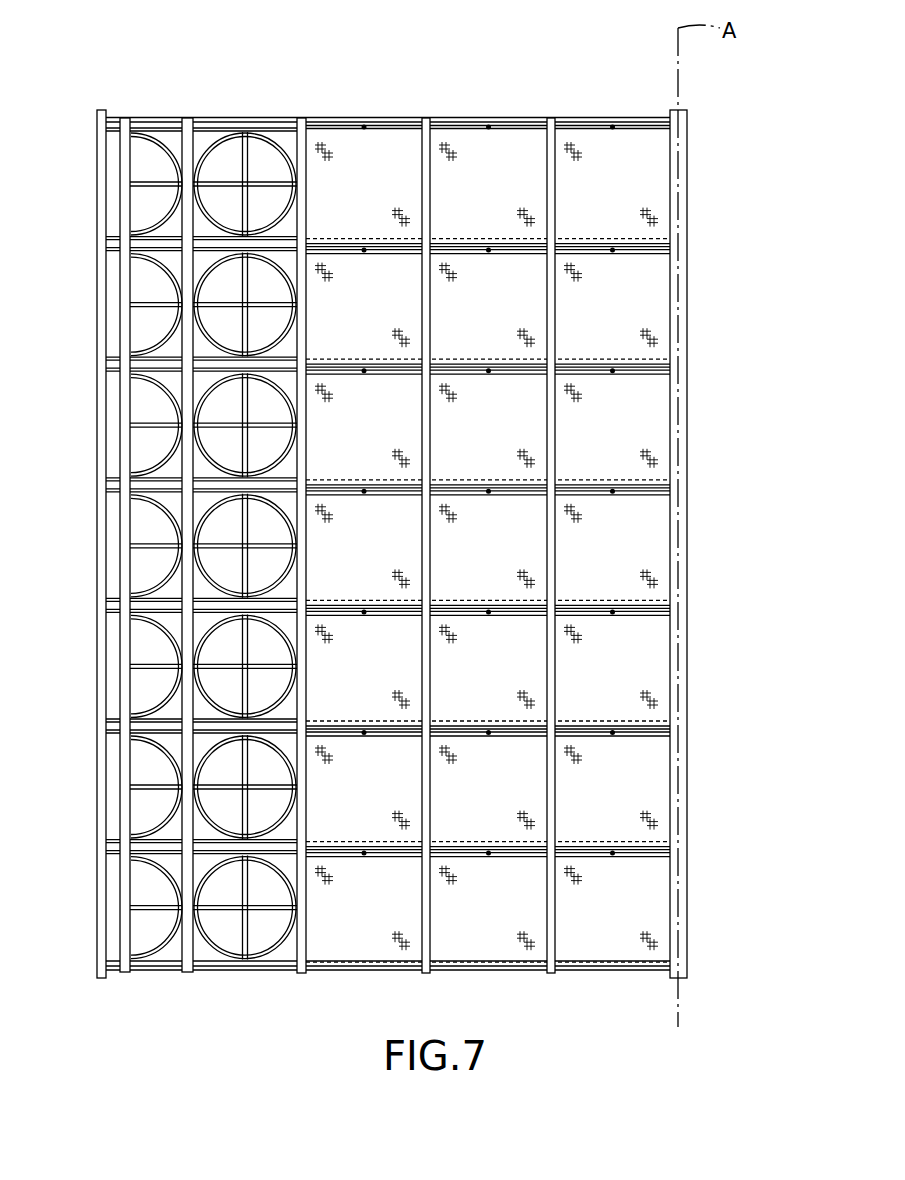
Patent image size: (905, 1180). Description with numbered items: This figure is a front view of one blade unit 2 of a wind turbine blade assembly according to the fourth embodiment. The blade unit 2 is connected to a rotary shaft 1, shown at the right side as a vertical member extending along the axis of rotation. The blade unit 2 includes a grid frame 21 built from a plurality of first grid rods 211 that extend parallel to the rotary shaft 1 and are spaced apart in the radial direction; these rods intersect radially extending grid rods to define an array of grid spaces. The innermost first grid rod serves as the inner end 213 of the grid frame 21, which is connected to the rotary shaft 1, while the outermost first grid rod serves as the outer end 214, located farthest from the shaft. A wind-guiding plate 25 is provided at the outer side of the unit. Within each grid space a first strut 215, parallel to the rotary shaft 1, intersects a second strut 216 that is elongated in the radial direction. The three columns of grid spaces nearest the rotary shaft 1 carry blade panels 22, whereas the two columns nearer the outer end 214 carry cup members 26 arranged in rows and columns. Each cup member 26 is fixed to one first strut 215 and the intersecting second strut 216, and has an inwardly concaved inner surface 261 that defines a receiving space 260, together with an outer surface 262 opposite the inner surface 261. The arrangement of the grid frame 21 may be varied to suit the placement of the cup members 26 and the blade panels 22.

The rotary shaft 1 is at (683, 195).
The blade unit 2 is at (310, 111).
The grid frame 21 is at (343, 115).
The first grid rod 211 is at (188, 143).
The inner end 213 is at (662, 159).
The outer end 214 is at (120, 181).
The first strut 215 is at (246, 150).
The second strut 216 is at (150, 183).
The blade panel 22 is at (655, 288).
The wind-guiding plate 25 is at (105, 208).
The cup member 26 is at (194, 335).
The receiving space 260 is at (217, 647).
The inner surface 261 is at (220, 693).
The outer surface 262 is at (198, 690).